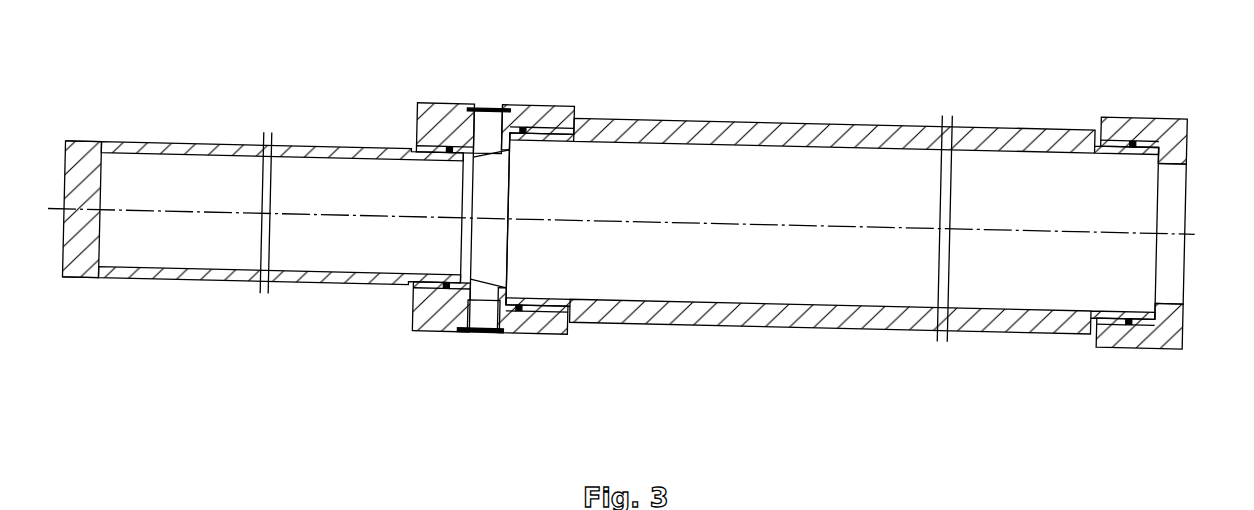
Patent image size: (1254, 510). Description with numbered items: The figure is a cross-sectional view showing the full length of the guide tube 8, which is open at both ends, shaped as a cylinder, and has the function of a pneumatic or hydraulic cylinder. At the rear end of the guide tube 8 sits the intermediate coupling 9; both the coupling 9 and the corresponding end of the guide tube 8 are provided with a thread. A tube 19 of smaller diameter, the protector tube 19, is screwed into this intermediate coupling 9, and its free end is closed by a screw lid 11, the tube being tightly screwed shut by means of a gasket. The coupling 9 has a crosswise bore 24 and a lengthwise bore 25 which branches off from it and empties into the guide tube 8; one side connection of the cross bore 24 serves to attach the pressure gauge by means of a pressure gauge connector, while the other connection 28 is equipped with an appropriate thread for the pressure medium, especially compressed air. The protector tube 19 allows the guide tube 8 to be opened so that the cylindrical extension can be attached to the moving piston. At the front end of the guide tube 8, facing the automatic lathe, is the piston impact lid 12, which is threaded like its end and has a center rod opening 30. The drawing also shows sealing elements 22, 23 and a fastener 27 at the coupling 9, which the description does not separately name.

The guide tube 8 is at (680, 322).
The protector tube 19 is at (299, 278).
The screw lid 11 is at (77, 262).
The intermediate coupling 9 is at (520, 335).
The flange ring 23 is at (546, 332).
The seal ring 22 is at (444, 290).
The crosswise bore 24 is at (484, 150).
The lengthwise bore 25 is at (500, 193).
The upper clamping bolt 27 is at (487, 150).
The connection 28 is at (478, 322).
The piston impact lid 12 is at (1125, 120).
The center rod opening 30 is at (1175, 207).